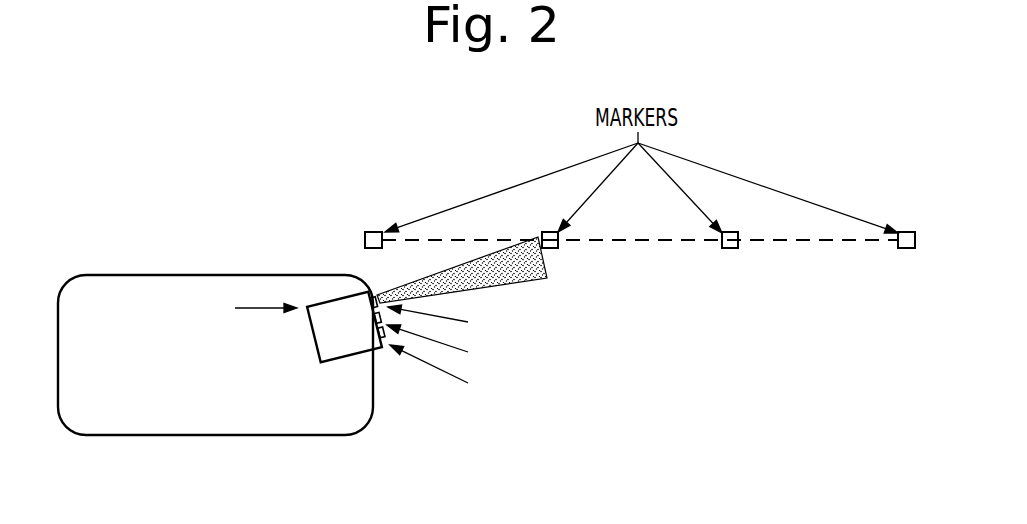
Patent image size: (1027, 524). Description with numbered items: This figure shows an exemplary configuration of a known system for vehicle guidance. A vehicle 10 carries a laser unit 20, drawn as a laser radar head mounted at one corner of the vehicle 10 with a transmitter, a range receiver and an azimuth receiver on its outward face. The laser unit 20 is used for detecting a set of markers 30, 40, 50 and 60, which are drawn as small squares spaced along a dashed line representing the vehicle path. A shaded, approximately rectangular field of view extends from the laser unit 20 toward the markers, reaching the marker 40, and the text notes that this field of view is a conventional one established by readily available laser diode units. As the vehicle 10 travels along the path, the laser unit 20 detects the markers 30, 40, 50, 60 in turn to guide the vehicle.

The vehicle 10 is at (90, 435).
The laser unit 20 is at (328, 362).
The marker 30 is at (363, 239).
The marker 40 is at (558, 248).
The marker 50 is at (735, 248).
The marker 60 is at (895, 250).